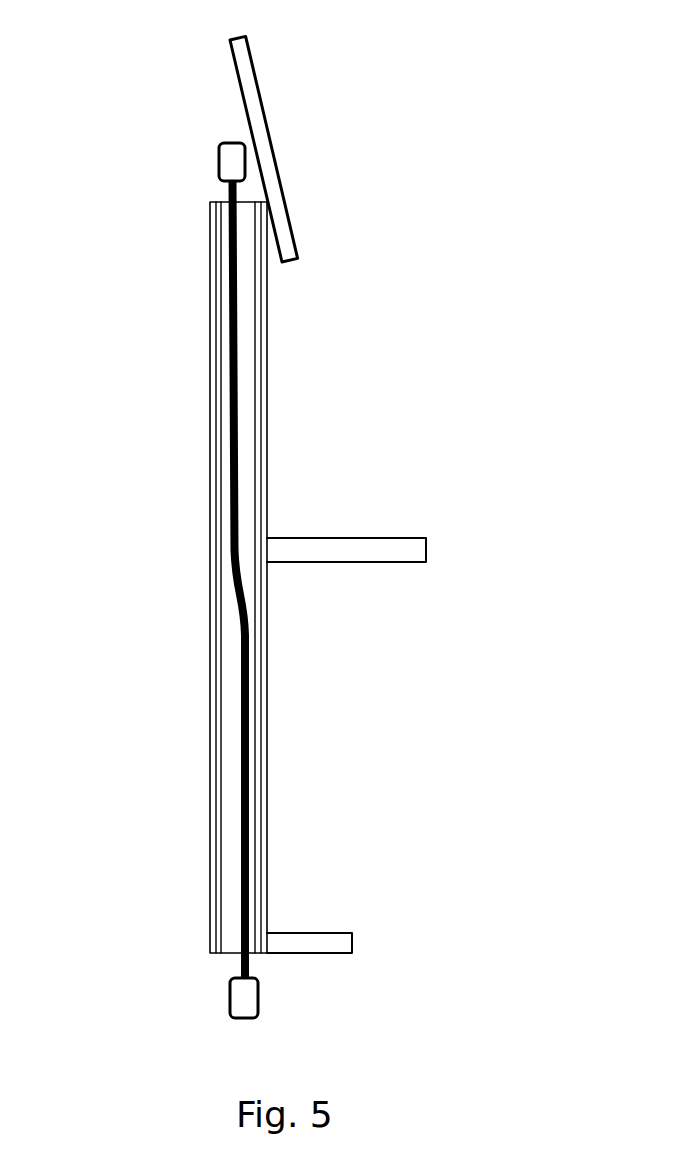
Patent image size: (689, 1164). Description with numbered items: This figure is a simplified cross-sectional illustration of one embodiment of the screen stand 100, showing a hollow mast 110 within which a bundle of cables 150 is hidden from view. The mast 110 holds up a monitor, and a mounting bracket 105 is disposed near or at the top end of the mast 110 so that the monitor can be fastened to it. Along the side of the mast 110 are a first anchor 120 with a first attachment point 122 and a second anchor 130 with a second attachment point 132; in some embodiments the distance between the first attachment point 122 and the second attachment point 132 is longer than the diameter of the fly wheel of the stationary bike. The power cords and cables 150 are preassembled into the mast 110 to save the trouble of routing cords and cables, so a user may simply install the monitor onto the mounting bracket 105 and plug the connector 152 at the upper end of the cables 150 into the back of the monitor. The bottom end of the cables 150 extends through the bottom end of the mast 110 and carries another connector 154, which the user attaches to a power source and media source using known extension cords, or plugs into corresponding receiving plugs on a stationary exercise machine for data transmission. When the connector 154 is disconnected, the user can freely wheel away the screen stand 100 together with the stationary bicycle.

The screen stand 100 is at (447, 178).
The mounting bracket 105 is at (245, 80).
The mast 110 is at (268, 368).
The first anchor 120 is at (308, 557).
The first attachment point 122 is at (407, 545).
The second anchor 130 is at (307, 957).
The second attachment point 132 is at (343, 928).
The bundle of cables 150 is at (232, 557).
The connector 152 is at (219, 172).
The connector 154 is at (244, 1005).